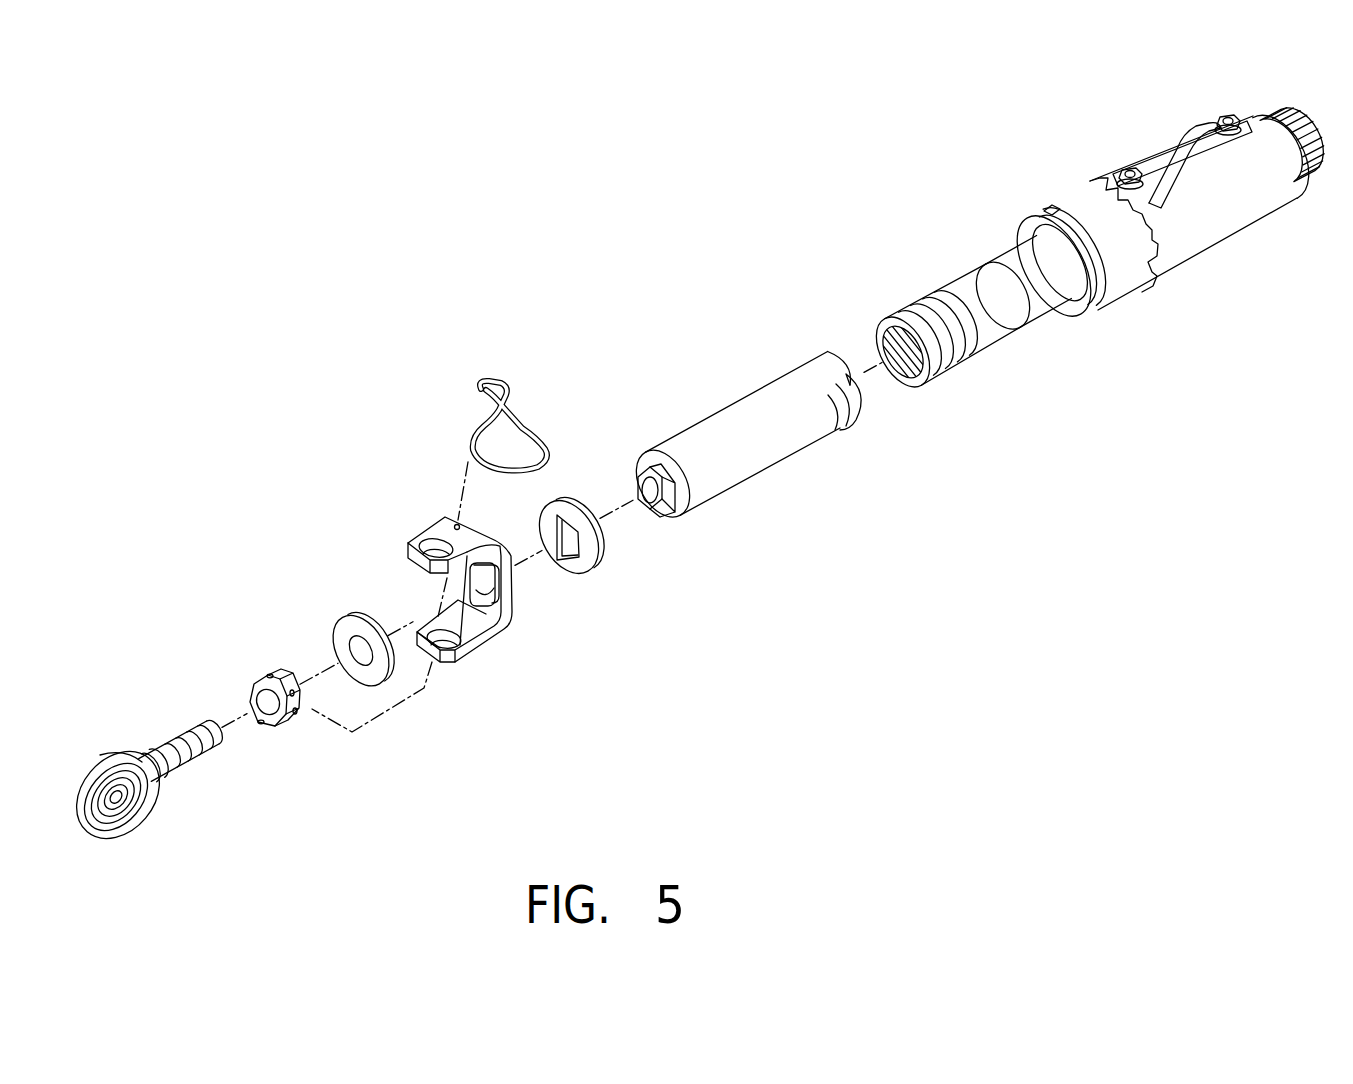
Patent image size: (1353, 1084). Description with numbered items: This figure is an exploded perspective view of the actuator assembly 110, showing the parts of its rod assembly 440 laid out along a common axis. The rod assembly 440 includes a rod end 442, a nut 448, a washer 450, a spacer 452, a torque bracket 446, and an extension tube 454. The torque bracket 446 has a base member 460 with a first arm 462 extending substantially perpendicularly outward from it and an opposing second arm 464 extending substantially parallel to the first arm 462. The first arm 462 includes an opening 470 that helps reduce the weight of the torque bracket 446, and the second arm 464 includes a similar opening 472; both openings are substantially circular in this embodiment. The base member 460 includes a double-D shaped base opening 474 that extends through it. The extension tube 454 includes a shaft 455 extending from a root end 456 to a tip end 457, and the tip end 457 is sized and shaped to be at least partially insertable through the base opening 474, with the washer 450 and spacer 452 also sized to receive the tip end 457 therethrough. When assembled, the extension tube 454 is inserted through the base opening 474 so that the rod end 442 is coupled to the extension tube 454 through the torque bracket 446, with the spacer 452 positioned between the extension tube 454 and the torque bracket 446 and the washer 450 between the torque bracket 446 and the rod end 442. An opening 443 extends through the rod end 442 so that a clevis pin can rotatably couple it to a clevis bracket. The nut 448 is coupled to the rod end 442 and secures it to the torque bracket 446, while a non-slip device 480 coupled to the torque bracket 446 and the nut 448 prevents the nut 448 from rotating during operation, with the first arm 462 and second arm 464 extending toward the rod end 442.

The actuator assembly 110 is at (612, 211).
The rod assembly 440 is at (508, 265).
The rod end 442 is at (90, 766).
The opening 443 is at (118, 797).
The torque bracket 446 is at (512, 630).
The nut 448 is at (270, 676).
The washer 450 is at (359, 622).
The spacer 452 is at (596, 562).
The extension tube 454 is at (748, 480).
The shaft 455 is at (820, 440).
The root end 456 is at (1004, 370).
The tip end 457 is at (656, 512).
The base member 460 is at (514, 604).
The first arm 462 is at (456, 526).
The second arm 464 is at (458, 663).
The opening 470 is at (430, 546).
The opening 472 is at (445, 640).
The opening 474 is at (490, 585).
The non-slip device 480 is at (530, 443).